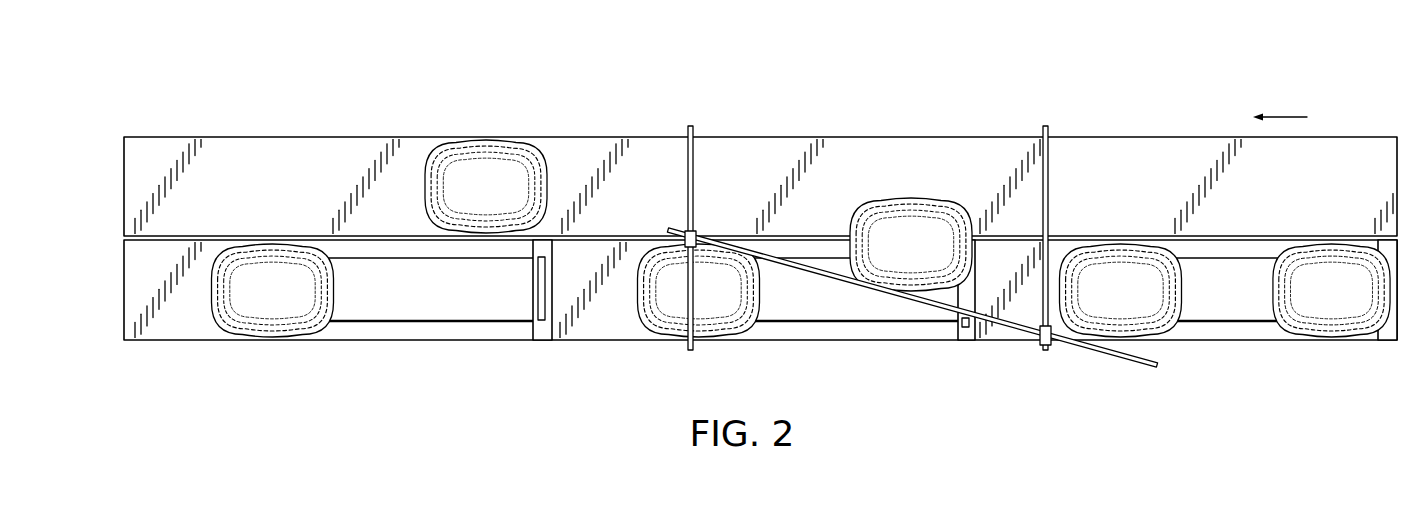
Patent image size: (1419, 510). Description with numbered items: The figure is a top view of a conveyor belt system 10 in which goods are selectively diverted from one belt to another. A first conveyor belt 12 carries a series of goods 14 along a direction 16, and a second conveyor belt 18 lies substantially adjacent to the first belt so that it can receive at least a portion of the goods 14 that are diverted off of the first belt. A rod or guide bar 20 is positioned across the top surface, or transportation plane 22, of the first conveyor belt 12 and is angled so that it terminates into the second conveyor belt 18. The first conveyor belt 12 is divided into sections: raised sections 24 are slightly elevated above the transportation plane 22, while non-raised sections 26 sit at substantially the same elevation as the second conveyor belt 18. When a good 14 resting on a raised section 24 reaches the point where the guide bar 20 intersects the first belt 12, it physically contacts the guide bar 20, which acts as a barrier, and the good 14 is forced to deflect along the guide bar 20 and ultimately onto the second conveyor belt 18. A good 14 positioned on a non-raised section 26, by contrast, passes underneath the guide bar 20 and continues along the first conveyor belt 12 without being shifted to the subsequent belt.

The conveyor belt system 10 is at (345, 107).
The first conveyor belt 12 is at (104, 268).
The goods 14 is at (471, 199).
The direction 16 is at (1287, 117).
The second conveyor belt 18 is at (104, 160).
The guide bar 20 is at (915, 307).
The transportation plane 22 is at (195, 313).
The raised section 24 is at (417, 310).
The non-raised section 26 is at (618, 315).